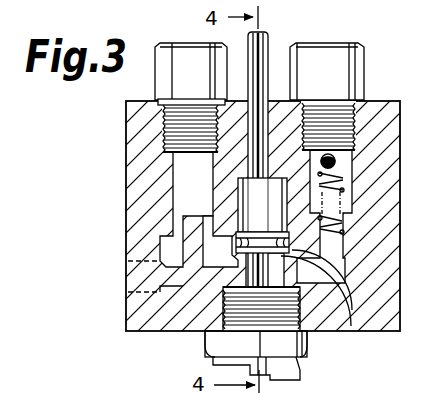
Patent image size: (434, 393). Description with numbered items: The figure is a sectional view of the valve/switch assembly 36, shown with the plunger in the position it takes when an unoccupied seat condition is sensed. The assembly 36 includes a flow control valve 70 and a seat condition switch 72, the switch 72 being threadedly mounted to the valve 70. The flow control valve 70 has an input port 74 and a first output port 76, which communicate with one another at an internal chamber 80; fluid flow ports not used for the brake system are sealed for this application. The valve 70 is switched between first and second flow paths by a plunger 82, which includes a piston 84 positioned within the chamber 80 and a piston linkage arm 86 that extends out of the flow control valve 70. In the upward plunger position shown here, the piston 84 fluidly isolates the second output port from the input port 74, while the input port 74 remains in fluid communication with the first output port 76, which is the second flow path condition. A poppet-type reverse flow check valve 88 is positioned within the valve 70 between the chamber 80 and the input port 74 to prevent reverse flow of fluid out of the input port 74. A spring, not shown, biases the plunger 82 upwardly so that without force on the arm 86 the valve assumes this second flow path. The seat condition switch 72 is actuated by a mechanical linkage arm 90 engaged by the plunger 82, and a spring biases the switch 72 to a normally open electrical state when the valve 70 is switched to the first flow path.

The valve/switch assembly 36 is at (110, 193).
The flow control valve 70 is at (124, 133).
The seat condition switch 72 is at (214, 343).
The input port 74 is at (335, 44).
The first output port 76 is at (181, 43).
The internal chamber 80 is at (243, 190).
The plunger 82 is at (236, 245).
The piston 84 is at (318, 292).
The piston linkage arm 86 is at (268, 50).
The reverse flow check valve 88 is at (356, 150).
The mechanical linkage arm 90 is at (322, 331).